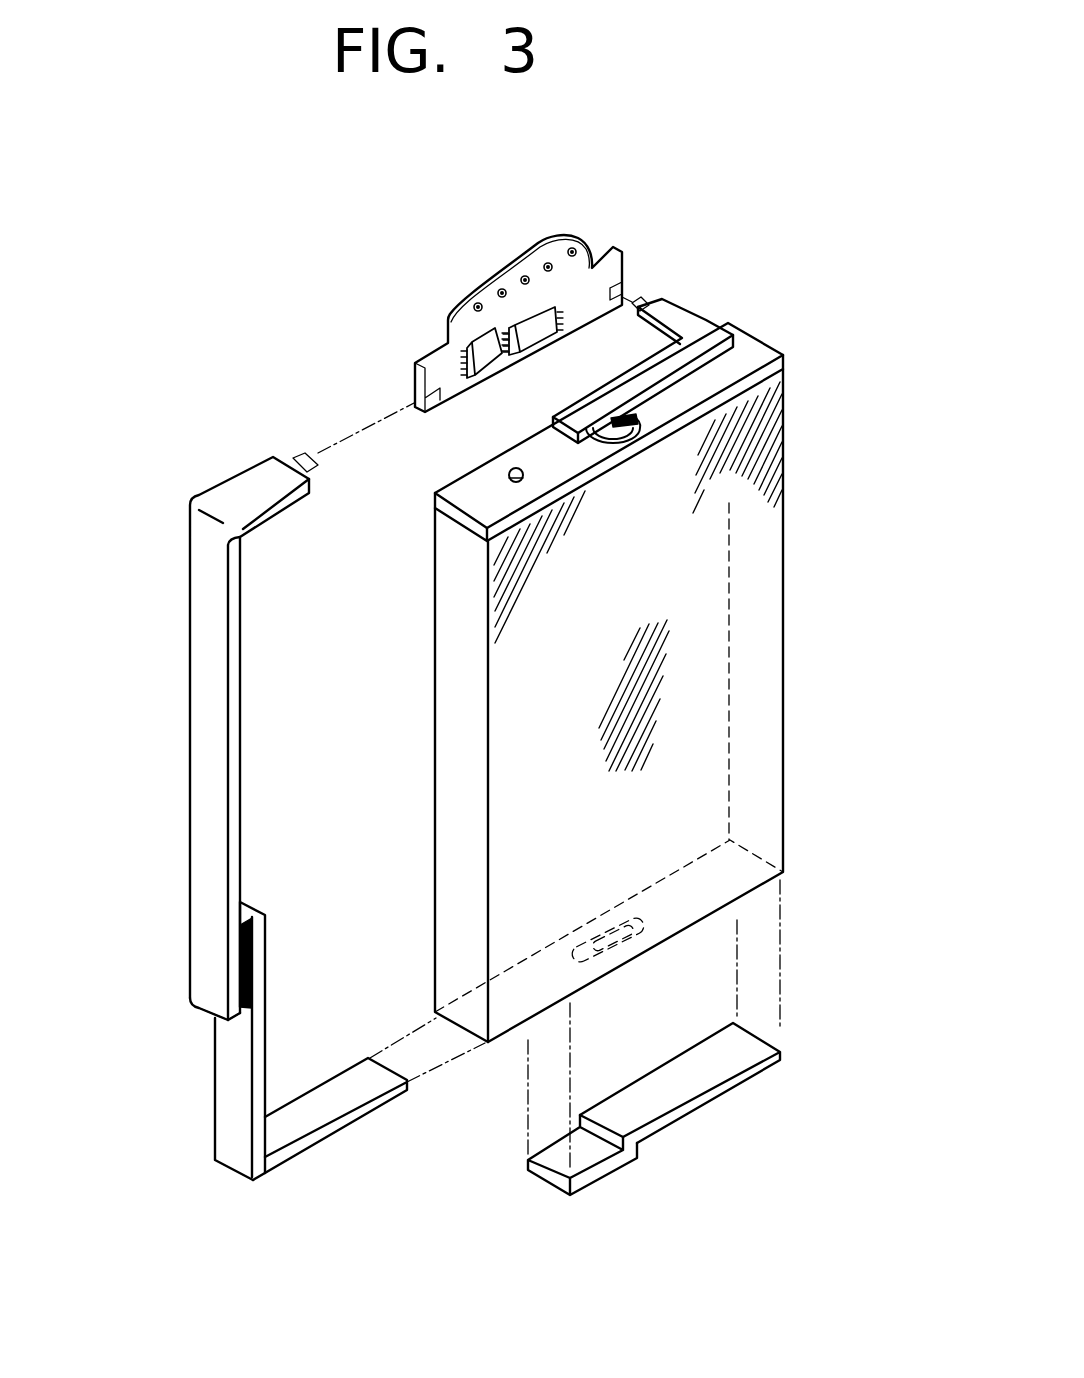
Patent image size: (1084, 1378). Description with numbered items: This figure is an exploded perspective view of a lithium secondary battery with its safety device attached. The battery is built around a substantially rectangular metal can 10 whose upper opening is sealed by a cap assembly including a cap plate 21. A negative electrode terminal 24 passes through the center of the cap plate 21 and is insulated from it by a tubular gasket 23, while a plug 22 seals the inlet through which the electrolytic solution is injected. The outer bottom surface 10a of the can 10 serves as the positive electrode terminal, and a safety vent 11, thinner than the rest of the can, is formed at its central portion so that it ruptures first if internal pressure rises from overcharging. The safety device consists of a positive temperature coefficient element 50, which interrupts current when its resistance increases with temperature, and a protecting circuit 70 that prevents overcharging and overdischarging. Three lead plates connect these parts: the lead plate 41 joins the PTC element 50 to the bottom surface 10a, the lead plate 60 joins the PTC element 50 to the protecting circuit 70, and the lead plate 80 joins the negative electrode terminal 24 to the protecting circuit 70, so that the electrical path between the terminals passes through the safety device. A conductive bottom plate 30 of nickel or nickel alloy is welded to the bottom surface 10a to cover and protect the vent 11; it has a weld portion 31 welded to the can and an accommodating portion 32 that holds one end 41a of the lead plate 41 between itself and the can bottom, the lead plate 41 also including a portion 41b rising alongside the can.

The can 10 is at (763, 742).
The outer bottom surface of the can 10a is at (658, 910).
The safety vent 11 is at (592, 942).
The cap plate 21 is at (785, 357).
The plug 22 is at (509, 461).
The gasket 23 is at (603, 443).
The negative electrode terminal 24 is at (637, 438).
The bottom plate 30 is at (650, 1074).
The weld portion 31 is at (706, 1062).
The accommodating portion 32 is at (557, 1170).
The lead plate 41 is at (350, 1078).
The end of the lead plate 41a is at (388, 1098).
The vertical portion of frame 41b is at (258, 955).
The positive temperature coefficient element 50 is at (242, 996).
The lead plate 60 is at (203, 570).
The protecting circuit 70 is at (552, 253).
The lead plate 80 is at (696, 328).